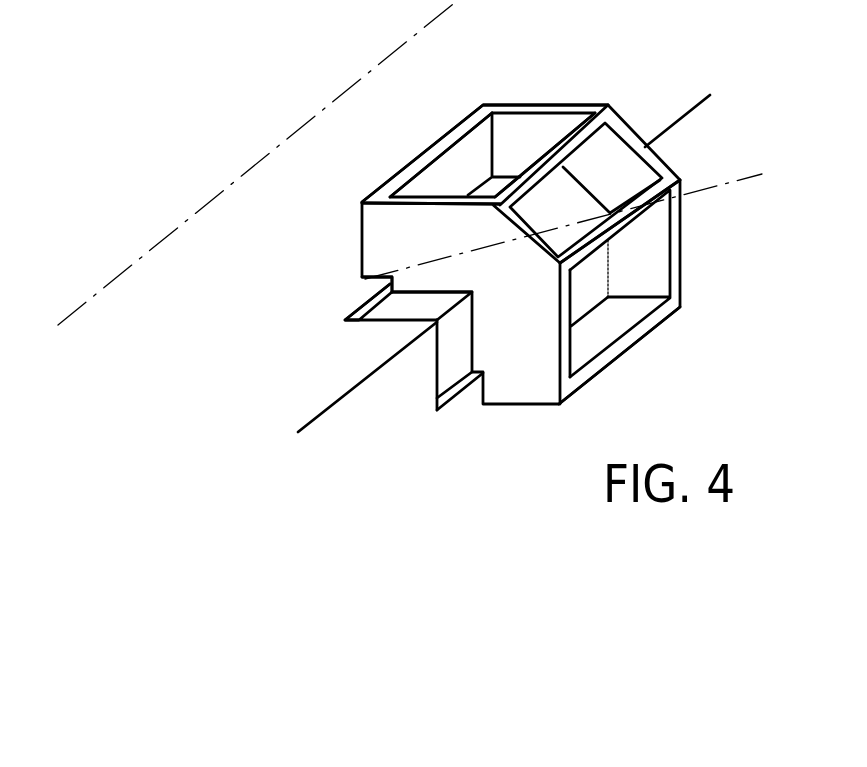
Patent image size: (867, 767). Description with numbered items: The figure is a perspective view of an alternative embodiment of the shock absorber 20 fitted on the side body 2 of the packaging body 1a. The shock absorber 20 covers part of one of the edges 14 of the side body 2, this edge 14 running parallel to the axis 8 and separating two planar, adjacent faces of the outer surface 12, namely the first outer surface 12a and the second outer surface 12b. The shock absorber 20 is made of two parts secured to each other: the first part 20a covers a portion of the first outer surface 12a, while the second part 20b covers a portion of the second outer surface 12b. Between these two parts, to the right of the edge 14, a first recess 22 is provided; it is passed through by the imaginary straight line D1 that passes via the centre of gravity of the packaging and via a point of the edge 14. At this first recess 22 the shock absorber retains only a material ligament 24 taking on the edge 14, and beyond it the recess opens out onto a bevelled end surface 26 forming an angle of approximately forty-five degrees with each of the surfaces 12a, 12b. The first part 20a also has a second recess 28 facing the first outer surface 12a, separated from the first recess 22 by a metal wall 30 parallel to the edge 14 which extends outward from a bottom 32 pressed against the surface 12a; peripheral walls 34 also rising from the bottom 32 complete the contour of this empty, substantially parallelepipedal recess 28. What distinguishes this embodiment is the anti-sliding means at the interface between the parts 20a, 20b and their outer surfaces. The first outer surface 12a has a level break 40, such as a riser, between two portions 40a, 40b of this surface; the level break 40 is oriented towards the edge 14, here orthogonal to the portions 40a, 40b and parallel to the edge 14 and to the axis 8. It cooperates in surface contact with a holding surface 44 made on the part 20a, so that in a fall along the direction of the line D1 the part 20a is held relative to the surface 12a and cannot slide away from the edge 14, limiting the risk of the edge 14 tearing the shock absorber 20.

The body 1a is at (300, 390).
The side body 2 is at (262, 381).
The axis 8 is at (123, 270).
The outer surface 12 is at (262, 316).
The first outer surface 12a is at (313, 388).
The second outer surface 12b is at (370, 418).
The edge 14 is at (322, 413).
The shock absorber 20 is at (408, 152).
The first part 20a is at (562, 100).
The second part 20b is at (688, 242).
The first recess 22 is at (635, 143).
The material ligament 24 is at (525, 218).
The end surface 26 is at (645, 142).
The second recess 28 is at (497, 177).
The metal wall 30 is at (580, 146).
The bottom 32 is at (487, 192).
The peripheral walls 34 is at (447, 157).
The level break 40 is at (358, 311).
The first portion of outer surface 40a is at (402, 308).
The second portion of outer surface 40b is at (337, 288).
The holding surface 44 is at (385, 284).
The imaginary straight line D1 is at (750, 176).